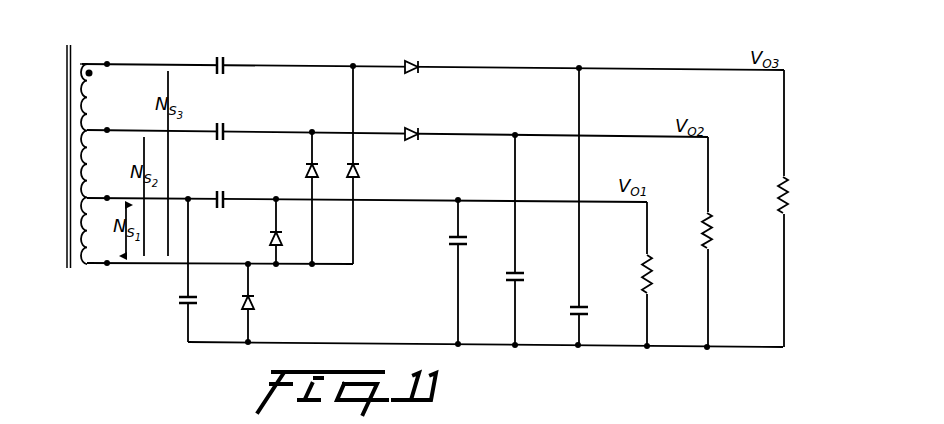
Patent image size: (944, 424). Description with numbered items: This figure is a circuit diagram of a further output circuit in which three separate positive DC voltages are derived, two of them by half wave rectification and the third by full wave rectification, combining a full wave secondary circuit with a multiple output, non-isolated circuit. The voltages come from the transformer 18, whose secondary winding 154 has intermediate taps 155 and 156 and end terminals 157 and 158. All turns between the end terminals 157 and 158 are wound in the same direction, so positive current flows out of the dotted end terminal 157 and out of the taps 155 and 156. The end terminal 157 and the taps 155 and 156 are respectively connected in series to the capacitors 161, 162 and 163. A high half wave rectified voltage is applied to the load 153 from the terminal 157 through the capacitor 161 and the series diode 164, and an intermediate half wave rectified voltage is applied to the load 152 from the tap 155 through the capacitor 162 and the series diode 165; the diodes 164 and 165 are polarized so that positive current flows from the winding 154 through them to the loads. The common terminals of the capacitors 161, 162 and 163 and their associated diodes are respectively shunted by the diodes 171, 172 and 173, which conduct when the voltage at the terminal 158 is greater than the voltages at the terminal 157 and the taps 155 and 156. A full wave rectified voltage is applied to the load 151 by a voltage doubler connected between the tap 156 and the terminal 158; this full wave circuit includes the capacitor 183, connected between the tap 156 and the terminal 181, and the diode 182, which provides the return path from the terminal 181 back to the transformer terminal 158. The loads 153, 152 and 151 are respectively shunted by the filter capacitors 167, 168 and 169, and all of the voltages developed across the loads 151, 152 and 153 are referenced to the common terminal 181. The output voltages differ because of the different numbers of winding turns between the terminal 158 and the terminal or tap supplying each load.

The transformer 18 is at (66, 175).
The transformer secondary winding 154 is at (80, 63).
The intermediate tap 155 is at (108, 128).
The intermediate tap 156 is at (107, 196).
The end terminal 157 is at (110, 62).
The end terminal 158 is at (107, 266).
The capacitor 161 is at (227, 55).
The capacitor 162 is at (227, 123).
The capacitor 163 is at (219, 189).
The diode 164 is at (417, 59).
The diode 165 is at (417, 126).
The capacitor 167 is at (449, 245).
The capacitor 168 is at (510, 280).
The capacitor 169 is at (590, 313).
The diode 171 is at (360, 169).
The diode 172 is at (306, 168).
The diode 173 is at (268, 239).
The terminal 181 is at (515, 346).
The diode 182 is at (256, 301).
The capacitor 183 is at (181, 306).
The load 151 is at (653, 270).
The load 152 is at (714, 233).
The load 153 is at (790, 192).